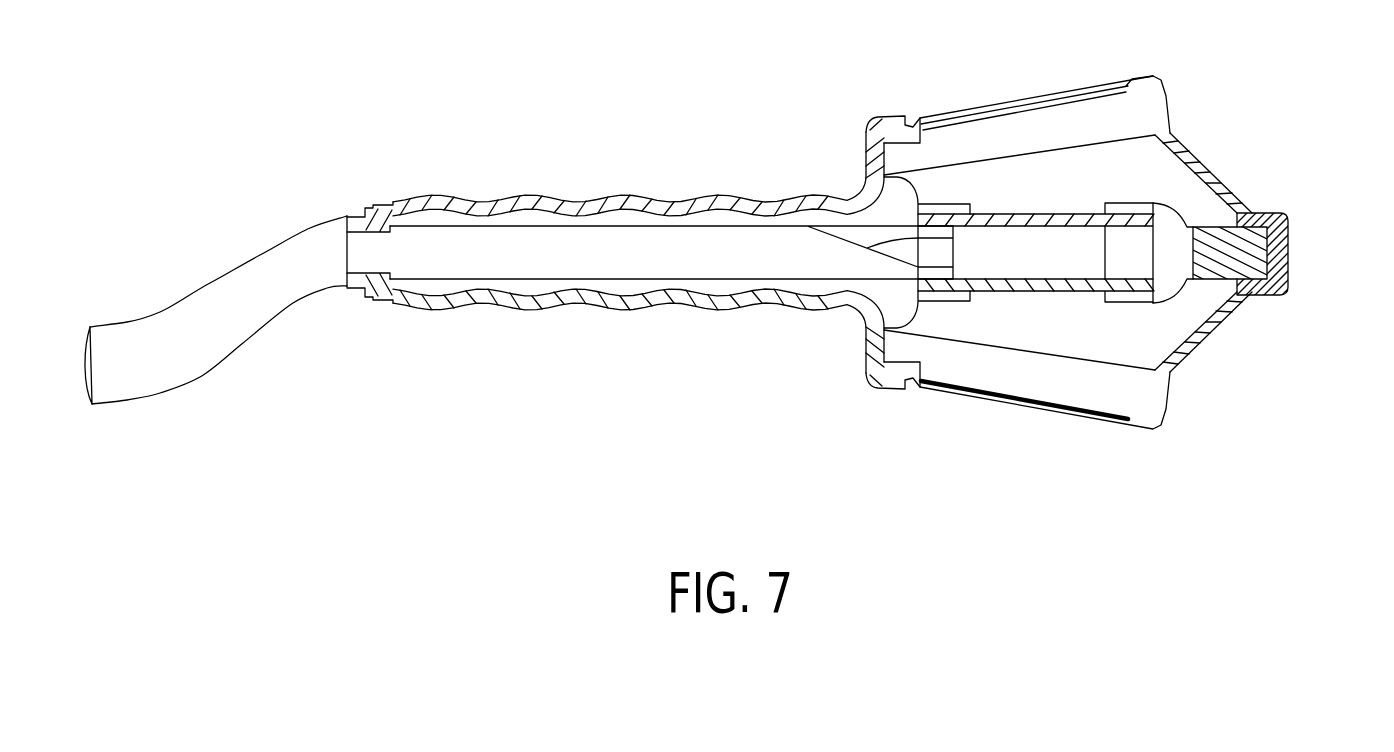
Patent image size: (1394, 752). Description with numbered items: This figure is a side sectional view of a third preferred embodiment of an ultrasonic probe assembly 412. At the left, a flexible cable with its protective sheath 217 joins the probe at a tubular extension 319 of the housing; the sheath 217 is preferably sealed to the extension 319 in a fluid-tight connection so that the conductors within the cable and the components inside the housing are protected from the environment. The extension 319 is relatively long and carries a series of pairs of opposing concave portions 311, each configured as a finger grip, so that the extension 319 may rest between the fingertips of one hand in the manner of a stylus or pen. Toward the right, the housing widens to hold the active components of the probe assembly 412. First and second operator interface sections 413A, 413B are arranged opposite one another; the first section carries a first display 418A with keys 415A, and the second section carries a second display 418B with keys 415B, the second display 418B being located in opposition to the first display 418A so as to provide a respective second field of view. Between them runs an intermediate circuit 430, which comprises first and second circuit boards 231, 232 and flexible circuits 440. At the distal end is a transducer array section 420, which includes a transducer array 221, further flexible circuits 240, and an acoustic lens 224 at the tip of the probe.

The protective sheath 217 is at (218, 283).
The opposing concave portions 311 is at (582, 198).
The tubular extension 319 is at (780, 197).
The probe assembly 412 is at (518, 462).
The intermediate circuit 430 is at (1014, 267).
The flexible circuits 440 is at (947, 203).
The first circuit board 231 is at (1072, 205).
The second circuit board 232 is at (1018, 292).
The transducer array section 420 is at (1183, 226).
The acoustic lens 224 is at (1297, 255).
The flexible circuits 240 is at (1228, 295).
The transducer array 221 is at (1232, 292).
The first operator interface section 413A is at (1000, 102).
The second operator interface section 413B is at (996, 405).
The keys 415A is at (882, 112).
The keys 415B is at (881, 400).
The first display 418A is at (990, 98).
The second display 418B is at (1009, 416).